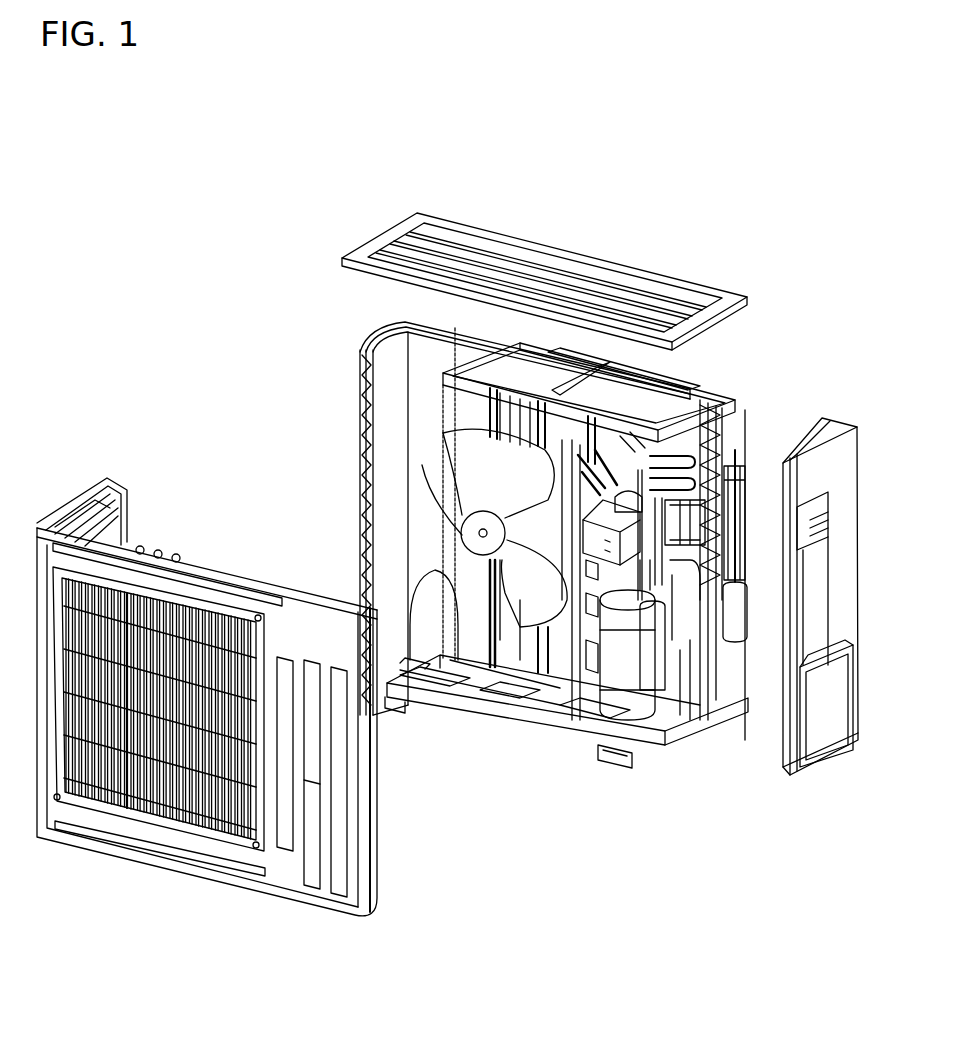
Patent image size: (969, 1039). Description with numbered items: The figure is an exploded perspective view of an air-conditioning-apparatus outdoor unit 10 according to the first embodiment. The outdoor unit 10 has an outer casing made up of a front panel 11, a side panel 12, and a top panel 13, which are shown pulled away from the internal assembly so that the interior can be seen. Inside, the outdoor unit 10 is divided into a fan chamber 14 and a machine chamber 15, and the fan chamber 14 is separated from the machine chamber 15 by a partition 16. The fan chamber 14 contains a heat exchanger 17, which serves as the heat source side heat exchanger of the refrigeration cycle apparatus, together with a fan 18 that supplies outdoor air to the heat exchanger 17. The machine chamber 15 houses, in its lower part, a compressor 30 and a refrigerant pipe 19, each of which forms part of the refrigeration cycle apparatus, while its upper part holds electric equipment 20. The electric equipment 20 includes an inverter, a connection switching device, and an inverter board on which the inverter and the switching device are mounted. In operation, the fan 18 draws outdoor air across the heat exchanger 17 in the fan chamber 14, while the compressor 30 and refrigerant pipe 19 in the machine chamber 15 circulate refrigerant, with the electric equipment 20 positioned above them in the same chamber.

The air-conditioning-apparatus outdoor unit 10 is at (190, 292).
The front panel 11 is at (107, 857).
The side panel 12 is at (805, 440).
The top panel 13 is at (578, 247).
The fan chamber 14 is at (358, 404).
The machine chamber 15 is at (677, 458).
The partition 16 is at (615, 665).
The heat exchanger 17 is at (396, 323).
The fan 18 is at (412, 525).
The refrigerant pipe 19 is at (736, 598).
The electric equipment 20 is at (690, 378).
The compressor 30 is at (610, 757).